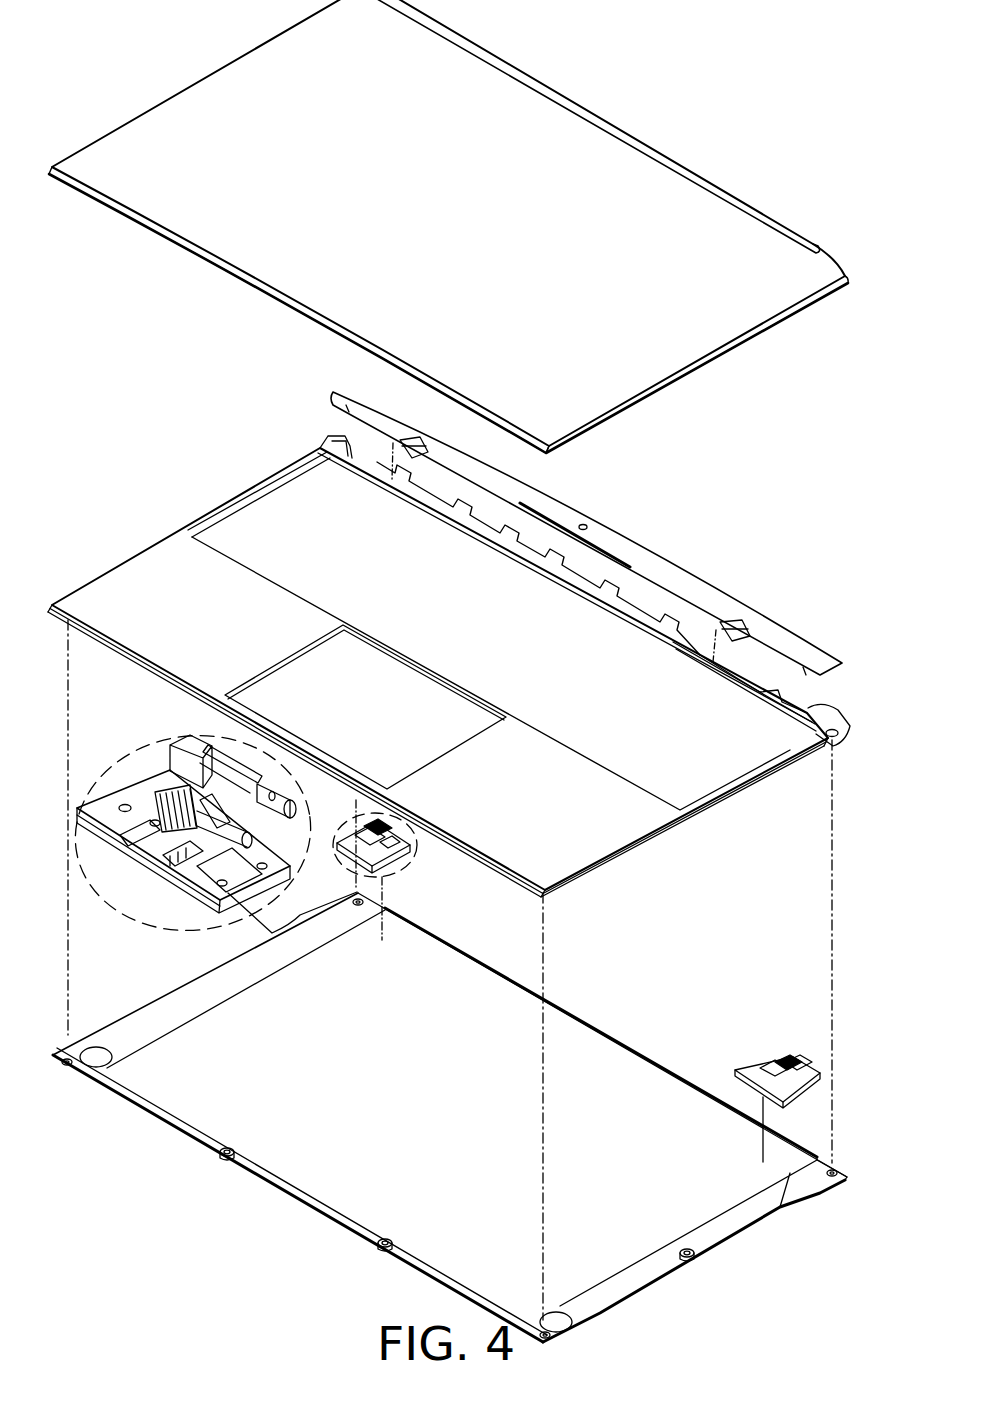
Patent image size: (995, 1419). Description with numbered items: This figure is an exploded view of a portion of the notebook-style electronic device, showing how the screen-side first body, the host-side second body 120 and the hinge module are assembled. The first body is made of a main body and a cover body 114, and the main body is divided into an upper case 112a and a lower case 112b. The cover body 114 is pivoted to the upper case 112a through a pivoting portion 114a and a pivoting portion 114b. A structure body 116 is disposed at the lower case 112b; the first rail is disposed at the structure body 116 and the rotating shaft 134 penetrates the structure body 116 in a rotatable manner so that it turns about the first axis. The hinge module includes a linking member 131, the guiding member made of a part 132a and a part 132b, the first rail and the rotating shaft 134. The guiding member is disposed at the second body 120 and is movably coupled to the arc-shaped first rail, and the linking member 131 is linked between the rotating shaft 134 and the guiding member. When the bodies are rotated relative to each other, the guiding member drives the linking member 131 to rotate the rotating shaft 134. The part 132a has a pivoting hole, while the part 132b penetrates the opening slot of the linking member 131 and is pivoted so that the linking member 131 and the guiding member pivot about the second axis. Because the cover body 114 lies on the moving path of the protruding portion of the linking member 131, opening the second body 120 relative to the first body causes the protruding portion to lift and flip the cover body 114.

The second body 120 is at (154, 130).
The part of guiding member 132a is at (538, 88).
The cover body 114 is at (362, 393).
The pivoting portion 114a is at (414, 452).
The pivoting portion 114b is at (733, 635).
The upper case 112a is at (118, 565).
The lower case 112b is at (128, 1010).
The structure body 116 is at (132, 852).
The part of guiding member 132b is at (300, 810).
The linking member 131 is at (313, 862).
The rotating shaft 134 is at (227, 895).